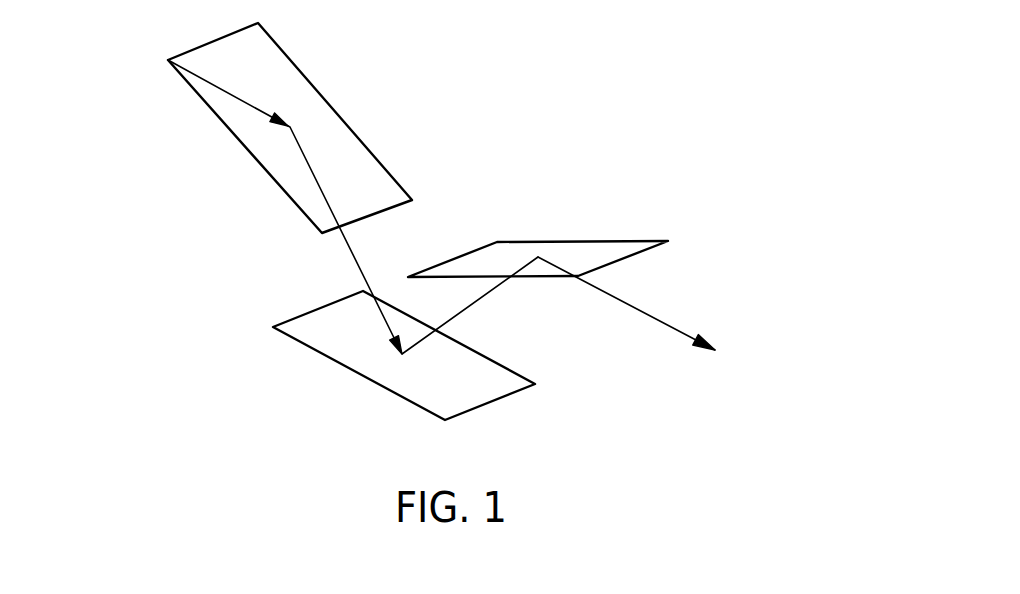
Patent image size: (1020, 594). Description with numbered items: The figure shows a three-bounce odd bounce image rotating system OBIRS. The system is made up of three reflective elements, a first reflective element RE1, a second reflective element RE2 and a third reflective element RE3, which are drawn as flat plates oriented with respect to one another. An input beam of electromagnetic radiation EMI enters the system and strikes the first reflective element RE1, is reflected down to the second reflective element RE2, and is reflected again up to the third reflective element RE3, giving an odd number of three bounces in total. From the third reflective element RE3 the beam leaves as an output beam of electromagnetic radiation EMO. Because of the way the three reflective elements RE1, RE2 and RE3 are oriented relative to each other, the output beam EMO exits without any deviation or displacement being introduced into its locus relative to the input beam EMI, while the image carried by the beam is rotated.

The odd bounce image rotating system OBIRS is at (610, 80).
The first reflective element RE1 is at (338, 85).
The second reflective element RE2 is at (378, 387).
The third reflective element RE3 is at (563, 232).
The input beam of electromagnetic radiation EMI is at (168, 60).
The output beam of electromagnetic radiation EMO is at (657, 314).